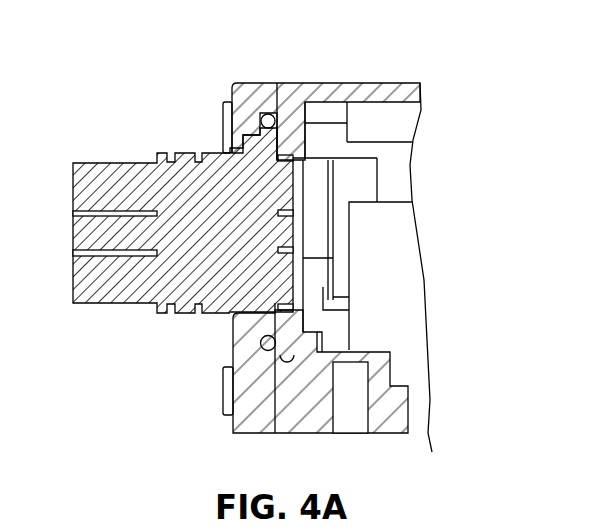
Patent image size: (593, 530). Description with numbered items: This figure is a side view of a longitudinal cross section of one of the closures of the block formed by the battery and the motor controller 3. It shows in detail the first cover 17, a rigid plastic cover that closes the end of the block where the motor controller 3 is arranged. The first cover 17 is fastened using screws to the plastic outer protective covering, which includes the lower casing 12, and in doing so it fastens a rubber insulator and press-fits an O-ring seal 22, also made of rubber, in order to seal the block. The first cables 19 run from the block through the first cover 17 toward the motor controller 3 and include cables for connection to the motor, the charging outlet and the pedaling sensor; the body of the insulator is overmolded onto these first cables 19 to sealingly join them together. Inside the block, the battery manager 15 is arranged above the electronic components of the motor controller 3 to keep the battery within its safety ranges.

The motor controller 3 is at (388, 285).
The lower casing 12 is at (215, 308).
The battery manager 15 is at (390, 179).
The first cover 17 is at (248, 413).
The first cables 19 is at (105, 178).
The O-ring seal 22 is at (266, 114).